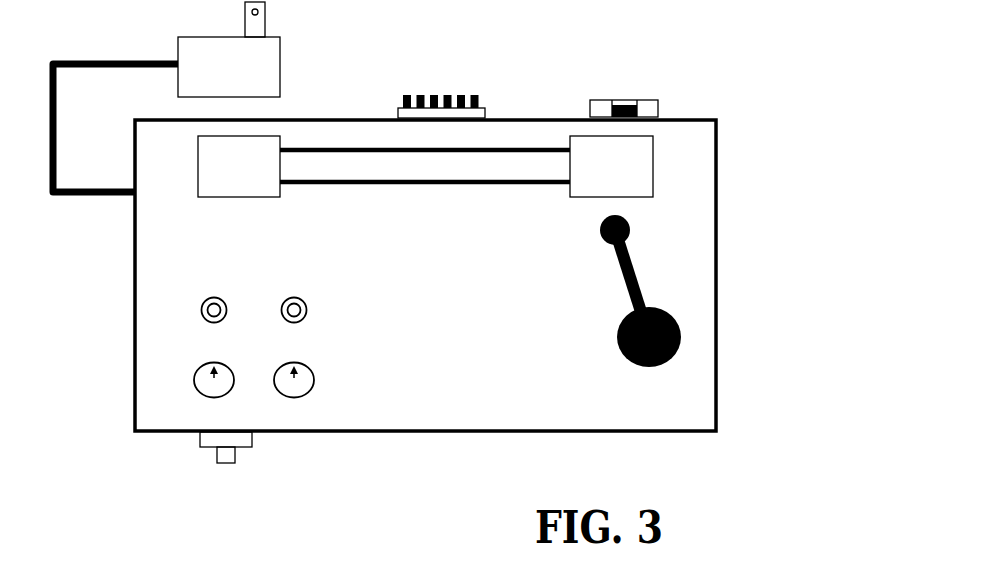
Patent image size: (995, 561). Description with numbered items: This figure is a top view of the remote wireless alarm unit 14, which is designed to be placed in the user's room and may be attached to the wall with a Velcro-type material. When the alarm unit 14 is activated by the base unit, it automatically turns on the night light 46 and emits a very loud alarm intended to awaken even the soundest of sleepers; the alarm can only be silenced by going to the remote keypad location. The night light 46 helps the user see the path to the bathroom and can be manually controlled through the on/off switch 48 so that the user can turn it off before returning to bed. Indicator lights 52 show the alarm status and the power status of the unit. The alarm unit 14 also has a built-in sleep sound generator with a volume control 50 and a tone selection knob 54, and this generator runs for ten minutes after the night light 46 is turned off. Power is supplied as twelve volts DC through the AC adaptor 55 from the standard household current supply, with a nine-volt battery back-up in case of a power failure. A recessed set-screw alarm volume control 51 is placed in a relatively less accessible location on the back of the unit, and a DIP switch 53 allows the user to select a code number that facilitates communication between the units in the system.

The remote wireless alarm unit 14 is at (728, 307).
The night light 46 is at (373, 187).
The on/off switch 48 is at (243, 447).
The volume control 50 is at (193, 380).
The alarm volume control 51 is at (645, 100).
The indicator lights 52 is at (295, 295).
The DIP switch 53 is at (472, 93).
The tone selection knob 54 is at (313, 380).
The AC adaptor 55 is at (280, 38).